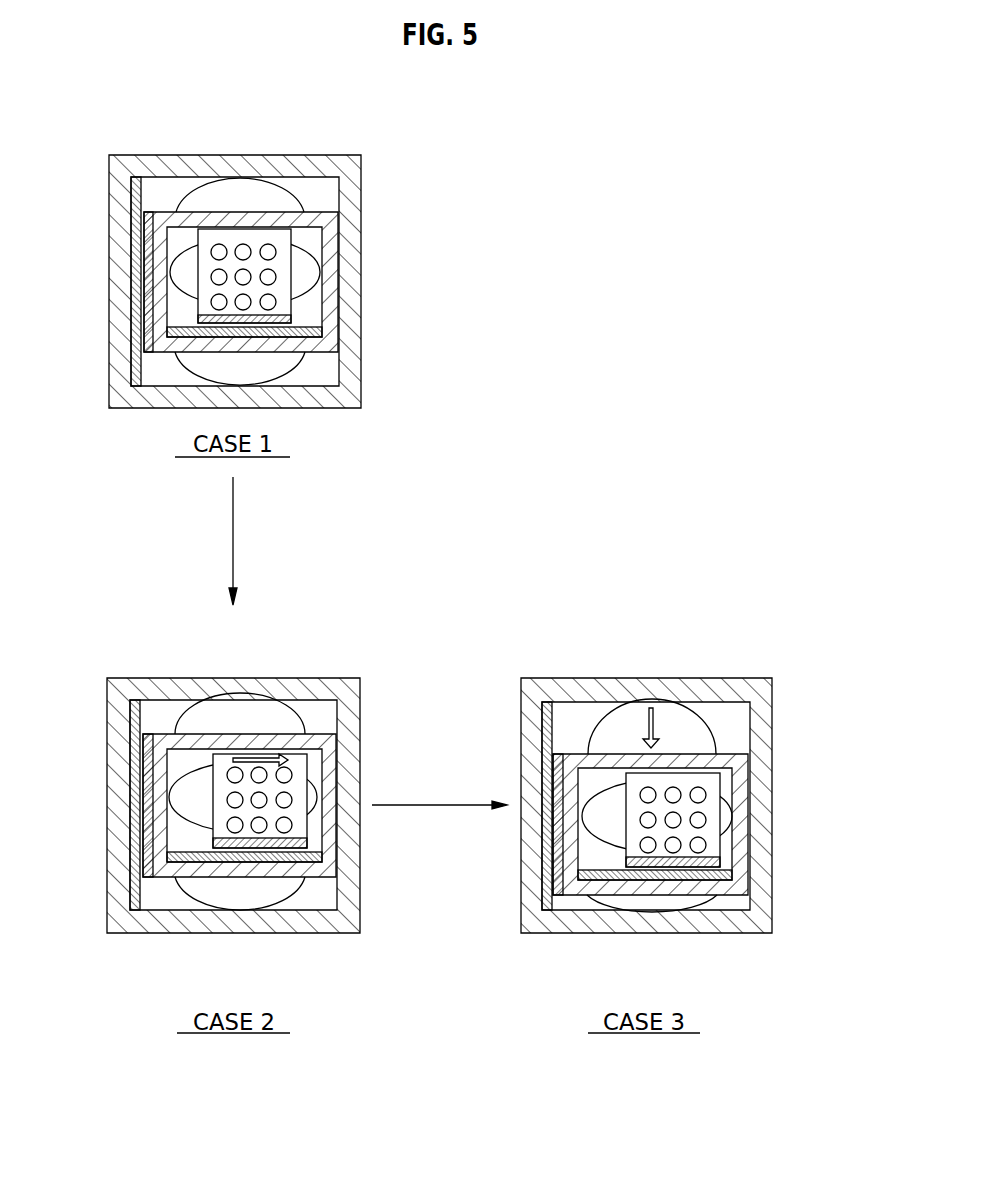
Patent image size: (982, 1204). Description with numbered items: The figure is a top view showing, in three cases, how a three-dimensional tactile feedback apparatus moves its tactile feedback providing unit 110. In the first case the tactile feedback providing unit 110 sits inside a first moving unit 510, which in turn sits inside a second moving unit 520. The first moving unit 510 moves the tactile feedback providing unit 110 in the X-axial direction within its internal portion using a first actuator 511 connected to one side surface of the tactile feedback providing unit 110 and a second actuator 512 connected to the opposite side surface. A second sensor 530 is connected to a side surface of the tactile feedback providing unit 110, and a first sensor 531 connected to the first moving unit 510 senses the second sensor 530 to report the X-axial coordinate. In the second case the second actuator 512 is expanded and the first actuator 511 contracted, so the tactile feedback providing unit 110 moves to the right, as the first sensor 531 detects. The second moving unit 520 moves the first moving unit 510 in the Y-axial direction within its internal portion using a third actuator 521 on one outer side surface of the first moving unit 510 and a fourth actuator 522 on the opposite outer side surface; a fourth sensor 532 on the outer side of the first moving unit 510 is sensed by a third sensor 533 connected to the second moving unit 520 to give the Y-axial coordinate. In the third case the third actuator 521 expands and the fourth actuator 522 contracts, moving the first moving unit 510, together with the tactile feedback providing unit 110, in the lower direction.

The tactile feedback providing unit 110 is at (288, 250).
The first moving unit 510 is at (320, 210).
The first actuator 511 is at (308, 270).
The second actuator 512 is at (182, 292).
The second moving unit 520 is at (168, 155).
The third actuator 521 is at (237, 193).
The fourth actuator 522 is at (267, 370).
The second sensor 530 is at (284, 318).
The first sensor 531 is at (310, 333).
The fourth sensor 532 is at (150, 237).
The third sensor 533 is at (133, 287).